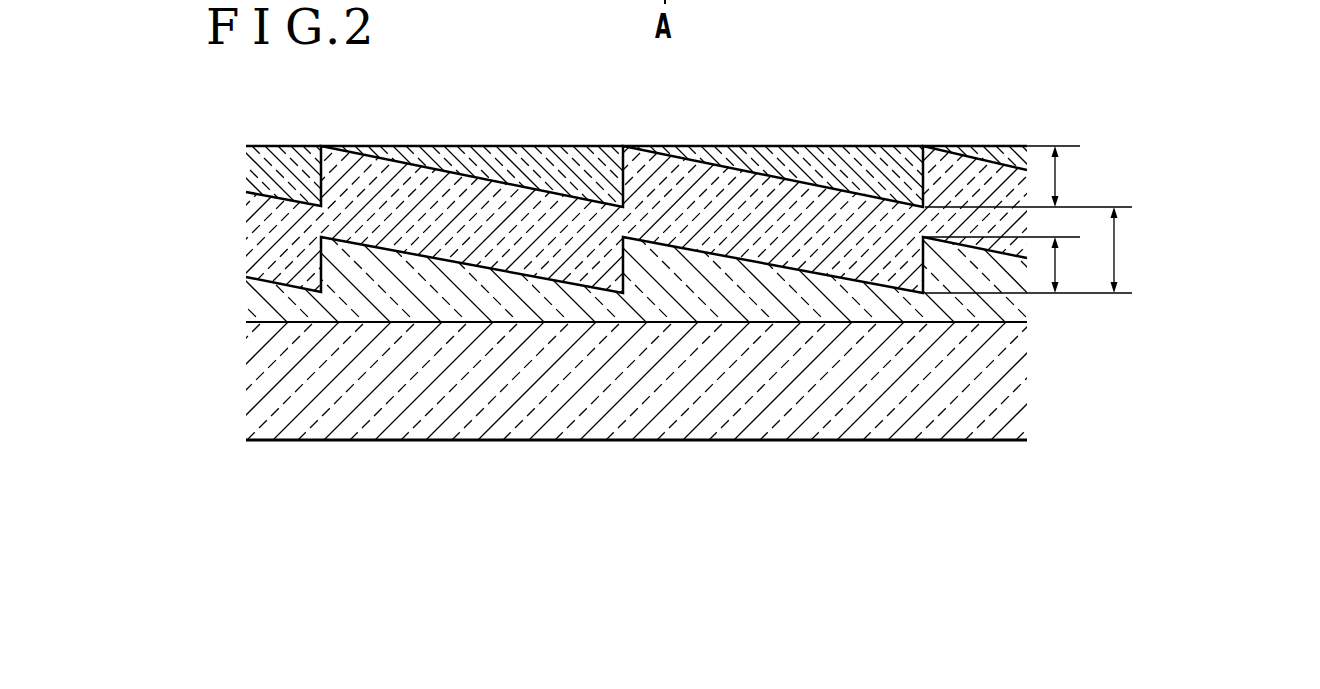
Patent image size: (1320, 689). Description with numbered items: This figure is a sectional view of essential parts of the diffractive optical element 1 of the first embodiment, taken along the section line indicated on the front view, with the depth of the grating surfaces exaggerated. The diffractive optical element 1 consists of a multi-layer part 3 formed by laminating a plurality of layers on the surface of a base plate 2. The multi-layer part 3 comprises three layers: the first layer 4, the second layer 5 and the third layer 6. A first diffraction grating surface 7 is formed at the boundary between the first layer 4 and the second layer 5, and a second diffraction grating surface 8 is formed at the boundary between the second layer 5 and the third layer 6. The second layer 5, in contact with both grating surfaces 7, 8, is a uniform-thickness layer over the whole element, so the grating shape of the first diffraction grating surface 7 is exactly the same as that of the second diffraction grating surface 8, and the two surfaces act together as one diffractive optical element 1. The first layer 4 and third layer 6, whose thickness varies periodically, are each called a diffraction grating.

The diffractive optical element 1 is at (1243, 208).
The base plate 2 is at (873, 423).
The multi-layer part 3 is at (1173, 150).
The first layer 4 is at (267, 303).
The second layer 5 is at (267, 242).
The third layer 6 is at (262, 170).
The first diffraction grating surface 7 is at (383, 248).
The second diffraction grating surface 8 is at (546, 193).